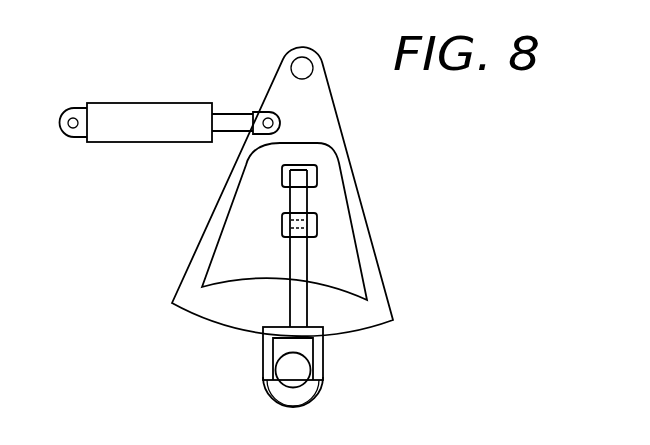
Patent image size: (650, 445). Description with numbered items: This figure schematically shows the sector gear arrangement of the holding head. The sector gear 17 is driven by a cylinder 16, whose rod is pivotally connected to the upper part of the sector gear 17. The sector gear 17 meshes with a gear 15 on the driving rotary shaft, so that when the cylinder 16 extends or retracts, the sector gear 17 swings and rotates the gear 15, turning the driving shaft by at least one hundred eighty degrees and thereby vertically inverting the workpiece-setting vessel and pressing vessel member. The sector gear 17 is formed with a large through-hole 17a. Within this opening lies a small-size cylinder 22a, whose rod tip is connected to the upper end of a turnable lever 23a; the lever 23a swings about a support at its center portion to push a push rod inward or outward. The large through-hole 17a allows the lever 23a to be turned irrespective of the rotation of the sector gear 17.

The gear 15 is at (323, 393).
The cylinder 16 is at (135, 113).
The sector gear 17 is at (377, 318).
The large through-hole 17a is at (342, 250).
The small-size cylinder 22a is at (317, 173).
The turnable lever 23a is at (290, 272).